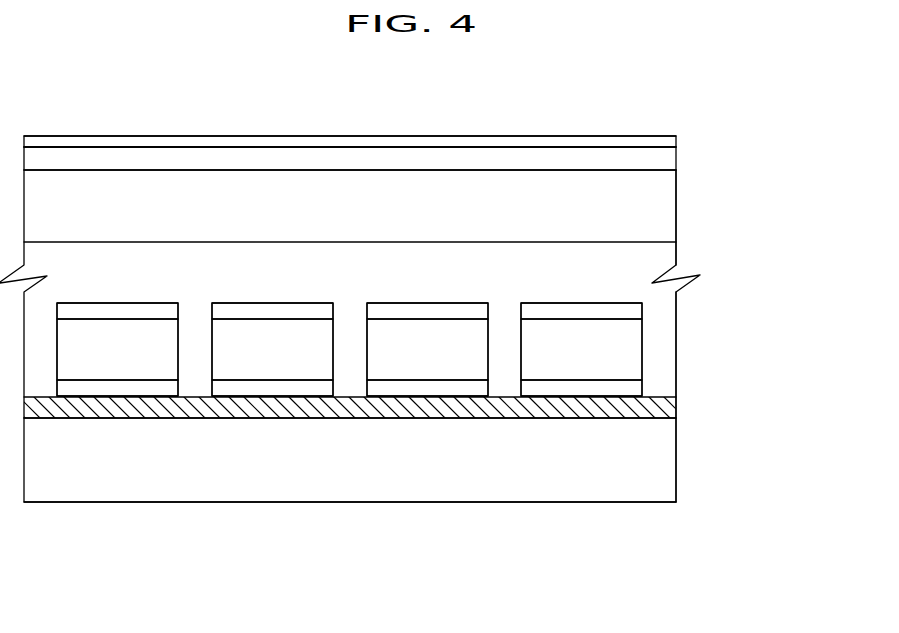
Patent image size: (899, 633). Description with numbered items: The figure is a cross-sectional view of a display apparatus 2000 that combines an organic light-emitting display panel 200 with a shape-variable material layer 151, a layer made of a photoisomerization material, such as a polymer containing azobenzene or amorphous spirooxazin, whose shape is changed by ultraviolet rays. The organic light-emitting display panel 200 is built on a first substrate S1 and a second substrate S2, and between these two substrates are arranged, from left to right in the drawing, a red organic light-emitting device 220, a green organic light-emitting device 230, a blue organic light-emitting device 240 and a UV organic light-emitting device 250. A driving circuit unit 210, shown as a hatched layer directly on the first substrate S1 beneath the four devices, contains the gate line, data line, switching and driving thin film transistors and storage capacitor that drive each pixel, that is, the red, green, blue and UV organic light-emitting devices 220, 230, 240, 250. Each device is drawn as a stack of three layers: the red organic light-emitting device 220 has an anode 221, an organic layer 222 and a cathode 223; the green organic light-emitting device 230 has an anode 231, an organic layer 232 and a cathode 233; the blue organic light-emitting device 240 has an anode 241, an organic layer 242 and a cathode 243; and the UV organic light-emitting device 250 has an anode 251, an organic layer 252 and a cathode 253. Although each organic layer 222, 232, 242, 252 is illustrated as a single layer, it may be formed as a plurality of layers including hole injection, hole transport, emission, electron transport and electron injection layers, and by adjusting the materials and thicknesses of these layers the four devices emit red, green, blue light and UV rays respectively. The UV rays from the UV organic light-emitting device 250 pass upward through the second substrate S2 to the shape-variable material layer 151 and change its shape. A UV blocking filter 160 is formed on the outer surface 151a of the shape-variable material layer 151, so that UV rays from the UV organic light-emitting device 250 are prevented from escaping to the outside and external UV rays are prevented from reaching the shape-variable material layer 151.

The display apparatus 2000 is at (680, 90).
The UV blocking filter 160 is at (663, 142).
The shape-variable material layer 151 is at (663, 160).
The surface of the shape-variable material layer 151a is at (573, 146).
The second substrate S2 is at (663, 212).
The organic light-emitting display panel 200 is at (755, 172).
The driving circuit unit 210 is at (663, 408).
The first substrate S1 is at (663, 468).
The red organic light-emitting device 220 is at (177, 568).
The anode 221 is at (68, 385).
The organic layer 222 is at (115, 363).
The cathode 223 is at (163, 310).
The green organic light-emitting device 230 is at (332, 568).
The anode 231 is at (223, 385).
The organic layer 232 is at (270, 363).
The cathode 233 is at (318, 310).
The blue organic light-emitting device 240 is at (487, 568).
The anode 241 is at (378, 385).
The organic layer 242 is at (425, 363).
The cathode 243 is at (473, 310).
The UV organic light-emitting device 250 is at (641, 568).
The anode 251 is at (532, 385).
The organic layer 252 is at (579, 363).
The cathode 253 is at (627, 310).